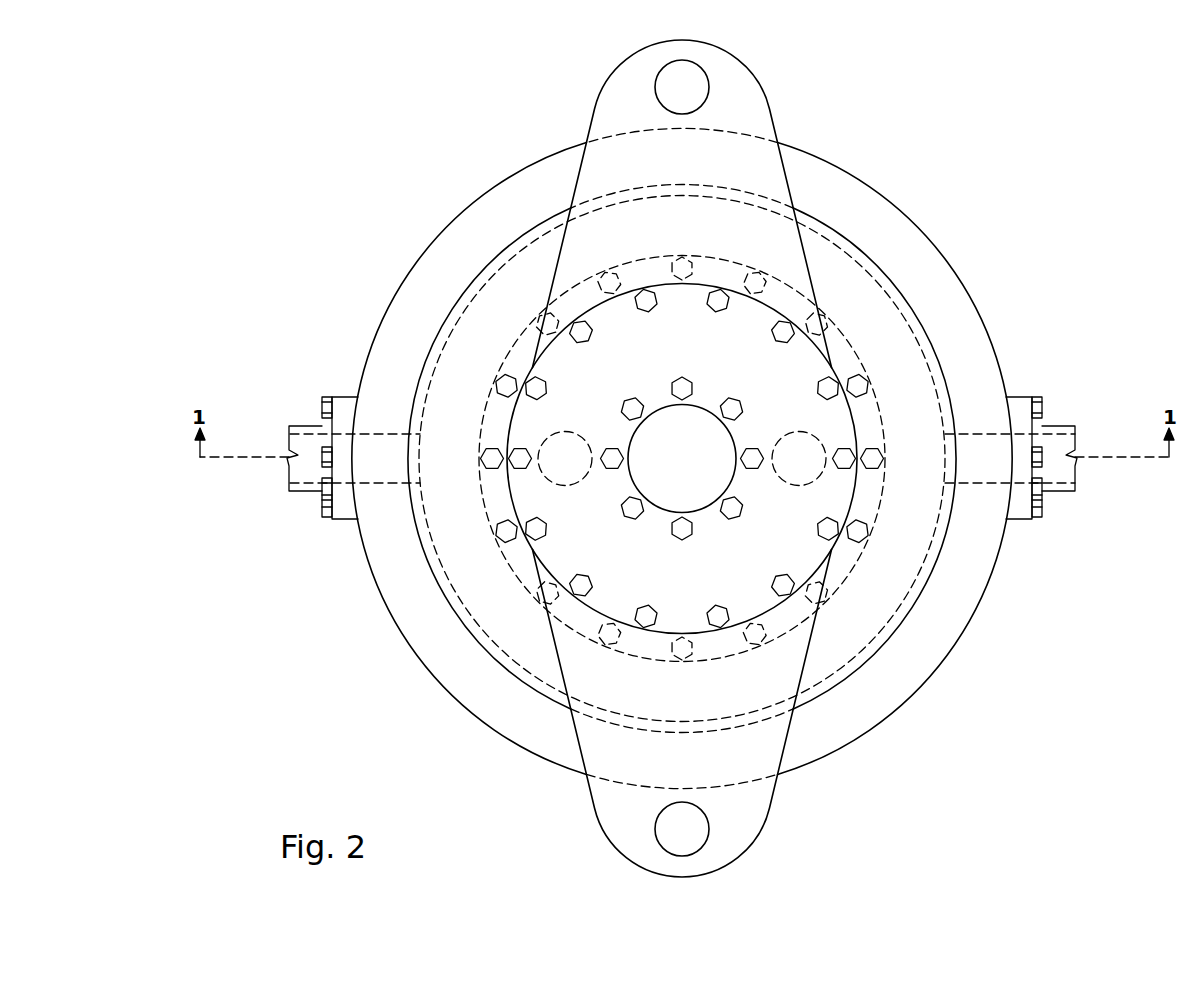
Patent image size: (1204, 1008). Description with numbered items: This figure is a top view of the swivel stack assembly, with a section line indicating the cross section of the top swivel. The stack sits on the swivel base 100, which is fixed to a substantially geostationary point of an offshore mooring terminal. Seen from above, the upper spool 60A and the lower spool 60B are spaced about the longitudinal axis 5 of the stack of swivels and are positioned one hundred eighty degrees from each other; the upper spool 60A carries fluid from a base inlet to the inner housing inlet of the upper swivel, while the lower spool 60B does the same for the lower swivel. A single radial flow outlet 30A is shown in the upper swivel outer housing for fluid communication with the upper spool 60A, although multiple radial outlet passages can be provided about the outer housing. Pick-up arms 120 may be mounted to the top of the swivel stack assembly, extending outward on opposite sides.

The swivel base 100 is at (993, 210).
The pick-up arms 120 is at (756, 110).
The longitudinal axis 5 is at (705, 468).
The upper spool 60A is at (800, 432).
The lower spool 60B is at (566, 438).
The radial flow outlet 30A is at (978, 458).